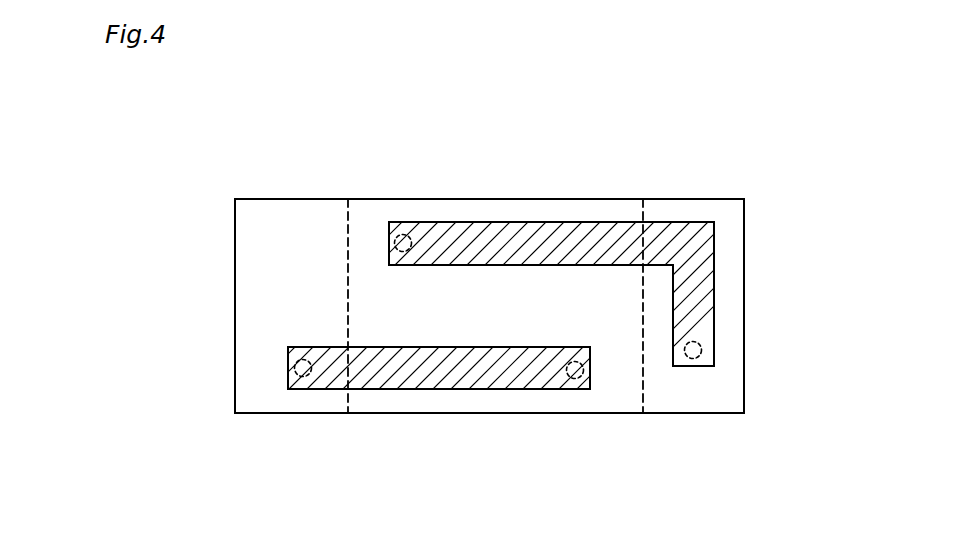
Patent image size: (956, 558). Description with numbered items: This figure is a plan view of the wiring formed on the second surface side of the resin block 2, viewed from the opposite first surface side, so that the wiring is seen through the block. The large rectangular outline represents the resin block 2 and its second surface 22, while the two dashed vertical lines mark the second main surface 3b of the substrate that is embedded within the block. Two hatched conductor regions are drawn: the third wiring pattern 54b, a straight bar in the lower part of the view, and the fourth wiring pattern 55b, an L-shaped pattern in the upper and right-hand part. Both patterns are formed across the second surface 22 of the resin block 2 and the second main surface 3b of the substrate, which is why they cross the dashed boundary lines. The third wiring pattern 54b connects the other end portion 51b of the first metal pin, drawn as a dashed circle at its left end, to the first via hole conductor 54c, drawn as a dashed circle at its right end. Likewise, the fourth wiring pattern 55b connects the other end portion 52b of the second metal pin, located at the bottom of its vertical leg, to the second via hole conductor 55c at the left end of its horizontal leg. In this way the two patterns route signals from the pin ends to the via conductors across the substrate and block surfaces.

The resin block 2 is at (248, 271).
The second surface 22 is at (289, 222).
The second main surface 3b is at (347, 237).
The fourth wiring pattern 55b is at (622, 232).
The second via hole conductor 55c is at (403, 234).
The other end portion of the second metal pin 52b is at (690, 358).
The third wiring pattern 54b is at (440, 378).
The other end portion of the first metal pin 51b is at (302, 378).
The first via hole conductor 54c is at (575, 379).